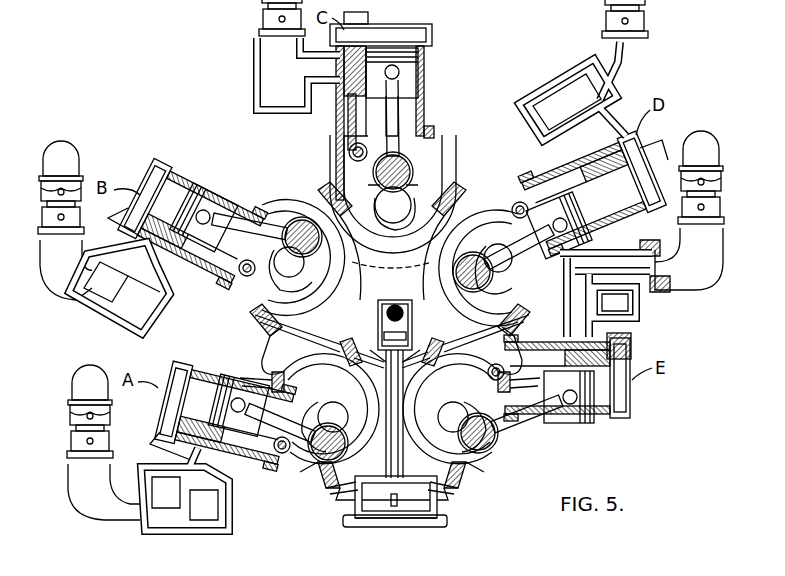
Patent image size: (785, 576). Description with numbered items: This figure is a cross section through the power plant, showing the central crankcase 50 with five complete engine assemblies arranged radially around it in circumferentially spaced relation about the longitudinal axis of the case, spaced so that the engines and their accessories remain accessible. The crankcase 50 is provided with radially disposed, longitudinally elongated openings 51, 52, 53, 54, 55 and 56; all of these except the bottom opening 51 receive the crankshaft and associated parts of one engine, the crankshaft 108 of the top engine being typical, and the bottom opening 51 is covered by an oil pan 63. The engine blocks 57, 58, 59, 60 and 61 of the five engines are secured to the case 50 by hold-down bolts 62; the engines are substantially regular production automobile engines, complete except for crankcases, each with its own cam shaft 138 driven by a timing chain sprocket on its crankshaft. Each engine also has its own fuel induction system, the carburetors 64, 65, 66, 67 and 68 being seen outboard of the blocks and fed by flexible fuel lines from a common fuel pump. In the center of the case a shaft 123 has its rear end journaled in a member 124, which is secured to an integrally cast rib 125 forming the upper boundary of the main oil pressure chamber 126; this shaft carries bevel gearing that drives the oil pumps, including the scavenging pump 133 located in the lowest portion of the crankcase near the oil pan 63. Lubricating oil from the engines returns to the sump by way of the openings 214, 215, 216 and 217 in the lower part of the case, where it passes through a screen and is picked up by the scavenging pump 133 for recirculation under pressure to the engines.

The central crankcase 50 is at (296, 336).
The opening 51 is at (350, 524).
The opening 52 is at (320, 470).
The opening 53 is at (254, 296).
The opening 54 is at (345, 205).
The opening 55 is at (498, 215).
The opening 56 is at (500, 452).
The engine block 57 is at (234, 374).
The engine block 58 is at (200, 186).
The engine block 59 is at (426, 86).
The engine block 60 is at (612, 238).
The engine block 61 is at (582, 428).
The hold-down bolts 62 is at (324, 484).
The oil pan 63 is at (416, 528).
The carburetor 64 is at (70, 432).
The carburetor 65 is at (40, 200).
The carburetor 66 is at (262, 30).
The carburetor 67 is at (602, 24).
The carburetor 68 is at (722, 184).
The crankshaft 108 is at (408, 168).
The shaft 123 is at (408, 317).
The member 124 is at (378, 315).
The integrally cast rib 125 is at (395, 412).
The main oil pressure chamber 126 is at (380, 334).
The scavenging pump 133 is at (390, 512).
The cam shaft 138 is at (348, 152).
The opening 214 is at (320, 328).
The opening 215 is at (472, 322).
The opening 216 is at (338, 500).
The opening 217 is at (456, 498).